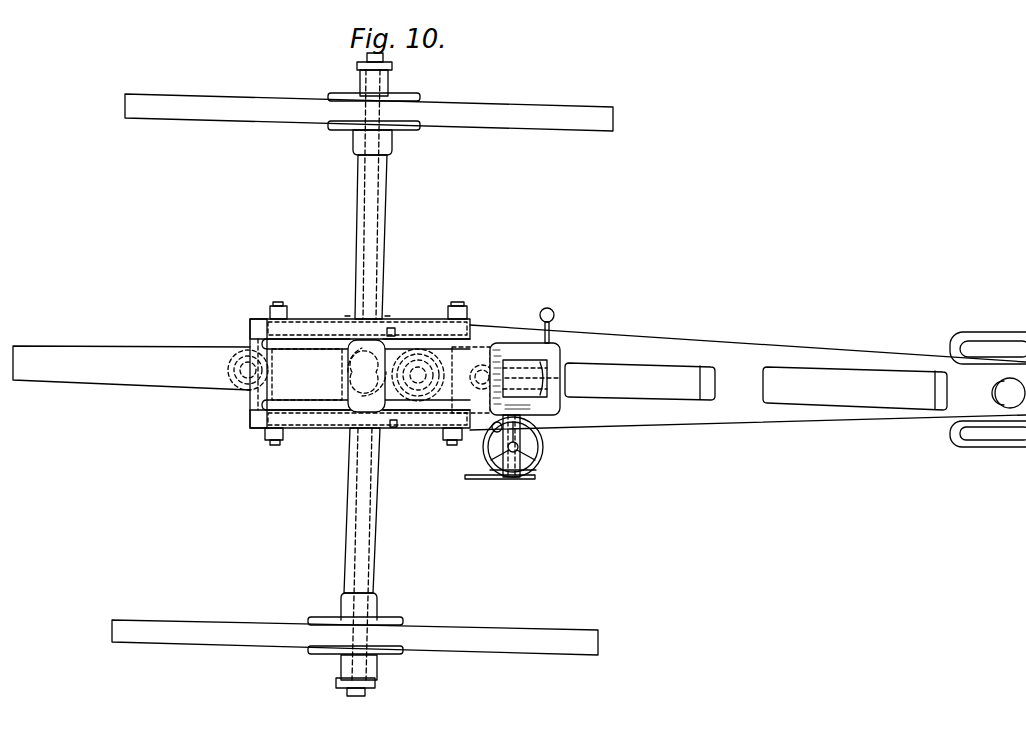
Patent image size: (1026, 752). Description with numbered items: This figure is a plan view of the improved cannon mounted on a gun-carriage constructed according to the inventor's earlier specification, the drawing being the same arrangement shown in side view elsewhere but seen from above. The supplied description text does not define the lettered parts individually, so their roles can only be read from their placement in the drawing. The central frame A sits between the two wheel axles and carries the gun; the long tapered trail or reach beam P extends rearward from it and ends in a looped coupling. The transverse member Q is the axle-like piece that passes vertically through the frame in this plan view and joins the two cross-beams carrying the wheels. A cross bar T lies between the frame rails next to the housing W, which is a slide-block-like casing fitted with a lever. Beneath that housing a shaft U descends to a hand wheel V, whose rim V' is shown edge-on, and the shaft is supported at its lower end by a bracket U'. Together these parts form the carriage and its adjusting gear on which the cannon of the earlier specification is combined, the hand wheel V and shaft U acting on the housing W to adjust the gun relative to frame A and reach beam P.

The frame A is at (372, 373).
The reach beam P is at (748, 386).
The axle Q is at (364, 374).
The cross bar T is at (449, 400).
The shaft U is at (492, 446).
The bracket U' is at (490, 472).
The hand wheel V is at (523, 447).
The hand wheel rim V' is at (524, 468).
The slide block W is at (560, 378).